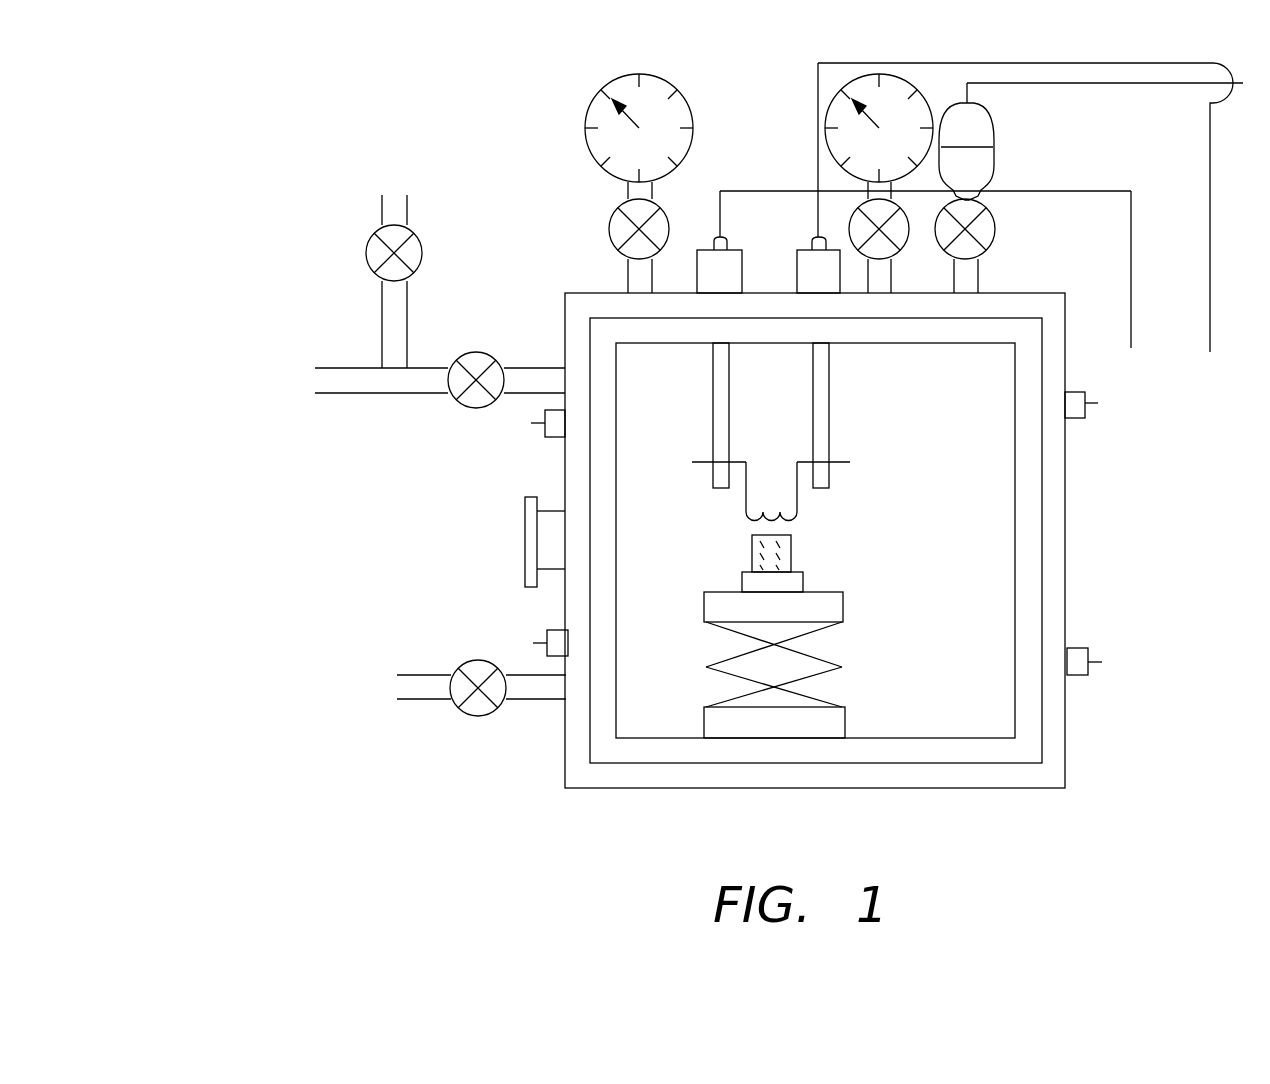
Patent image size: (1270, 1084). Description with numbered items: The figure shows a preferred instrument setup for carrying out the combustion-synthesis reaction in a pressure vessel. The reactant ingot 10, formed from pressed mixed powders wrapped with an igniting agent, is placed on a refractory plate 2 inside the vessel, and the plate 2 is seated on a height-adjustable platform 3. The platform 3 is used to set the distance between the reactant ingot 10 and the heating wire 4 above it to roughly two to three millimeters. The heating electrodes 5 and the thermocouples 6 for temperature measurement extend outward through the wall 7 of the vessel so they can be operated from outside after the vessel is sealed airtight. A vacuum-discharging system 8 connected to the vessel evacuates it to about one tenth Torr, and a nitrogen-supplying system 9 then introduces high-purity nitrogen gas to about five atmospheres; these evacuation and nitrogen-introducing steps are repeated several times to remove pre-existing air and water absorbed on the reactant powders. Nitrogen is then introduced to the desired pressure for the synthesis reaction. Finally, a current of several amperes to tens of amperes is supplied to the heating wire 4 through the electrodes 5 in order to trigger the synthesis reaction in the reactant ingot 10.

The refractory plate 2 is at (793, 580).
The height-adjustable platform 3 is at (717, 672).
The heating wire 4 is at (752, 513).
The heating electrodes 5 is at (722, 438).
The thermocouples 6 is at (548, 432).
The wall 7 is at (1055, 587).
The vacuum-discharging system 8 is at (405, 688).
The nitrogen-supplying system 9 is at (332, 380).
The reactant ingot 10 is at (787, 552).